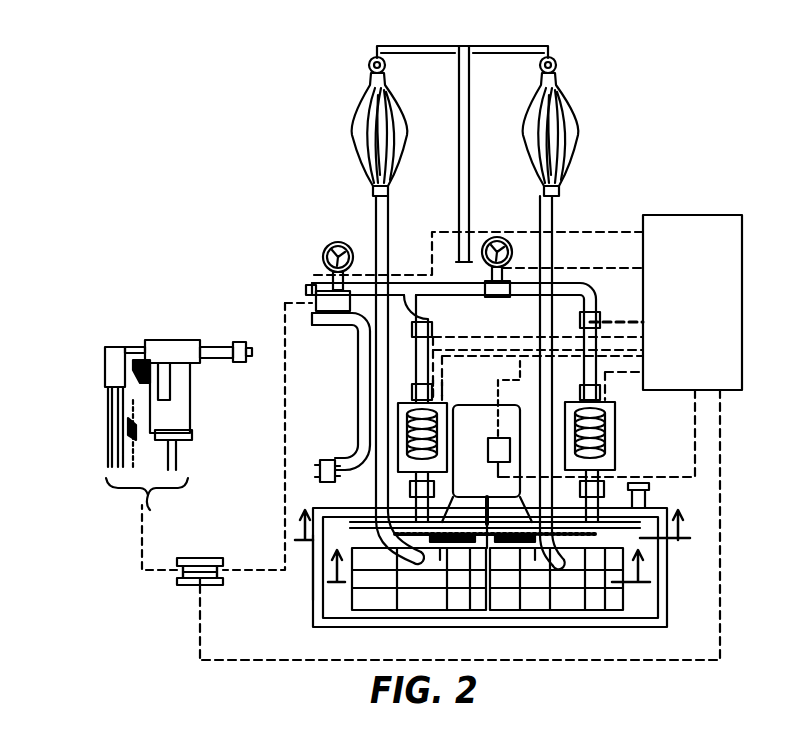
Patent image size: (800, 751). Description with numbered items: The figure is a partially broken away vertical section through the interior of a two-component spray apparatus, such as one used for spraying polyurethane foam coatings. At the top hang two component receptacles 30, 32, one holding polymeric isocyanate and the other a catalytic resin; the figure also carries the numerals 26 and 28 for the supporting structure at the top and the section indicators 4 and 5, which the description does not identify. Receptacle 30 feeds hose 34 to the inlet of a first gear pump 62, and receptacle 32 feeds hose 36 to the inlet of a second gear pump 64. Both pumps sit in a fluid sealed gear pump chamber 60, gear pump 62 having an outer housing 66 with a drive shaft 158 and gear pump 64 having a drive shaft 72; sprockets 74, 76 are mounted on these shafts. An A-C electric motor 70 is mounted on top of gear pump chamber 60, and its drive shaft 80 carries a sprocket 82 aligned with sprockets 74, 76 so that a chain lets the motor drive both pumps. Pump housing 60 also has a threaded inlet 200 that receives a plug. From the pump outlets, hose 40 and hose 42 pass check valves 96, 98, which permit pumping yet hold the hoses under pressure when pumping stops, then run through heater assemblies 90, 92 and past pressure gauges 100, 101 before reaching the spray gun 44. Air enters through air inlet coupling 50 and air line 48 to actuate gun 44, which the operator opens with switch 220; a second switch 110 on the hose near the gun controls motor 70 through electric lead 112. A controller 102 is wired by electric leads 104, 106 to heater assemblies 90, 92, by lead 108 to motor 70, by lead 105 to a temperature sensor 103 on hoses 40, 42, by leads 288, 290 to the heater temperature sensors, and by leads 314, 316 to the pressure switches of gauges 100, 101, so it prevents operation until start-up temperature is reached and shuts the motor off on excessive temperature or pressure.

The hanger tube 26 is at (470, 45).
The hanger rings 28 is at (370, 60).
The component receptacle 30 is at (358, 117).
The component receptacle 32 is at (567, 117).
The hose 34 is at (389, 212).
The hose 36 is at (553, 212).
The hose 40 is at (308, 297).
The hose 42 is at (318, 290).
The spray gun 44 is at (183, 340).
The air line 48 is at (358, 385).
The air inlet coupling 50 is at (328, 460).
The gear pump chamber 60 is at (658, 598).
The gear pump 62 is at (380, 625).
The gear pump 64 is at (615, 625).
The outer housing 66 is at (316, 610).
The electric motor 70 is at (475, 452).
The drive shaft 72 is at (440, 552).
The sprocket 74 is at (395, 534).
The sprocket 76 is at (588, 534).
The drive shaft 80 is at (497, 503).
The sprocket 82 is at (488, 560).
The heater assembly 90 is at (398, 458).
The heater assembly 92 is at (612, 430).
The check valve 96 is at (410, 497).
The check valve 98 is at (580, 497).
The pressure gauge 100 is at (336, 242).
The pressure gauge 101 is at (496, 237).
The controller 102 is at (697, 214).
The sensor 103 is at (200, 558).
The electric lead 104 is at (640, 349).
The electrical lead 105 is at (200, 625).
The electric lead 106 is at (641, 358).
The electric lead 108 is at (720, 466).
The switch 110 is at (133, 445).
The electric lead 112 is at (292, 446).
The drive shaft 158 is at (535, 552).
The threaded inlet 200 is at (640, 488).
The switch 220 is at (140, 347).
The electrical lead 288 is at (521, 362).
The lead 290 is at (608, 382).
The lead 314 is at (602, 232).
The lead 316 is at (588, 268).
The section line 4 is at (489, 581).
The section line 5 is at (490, 545).